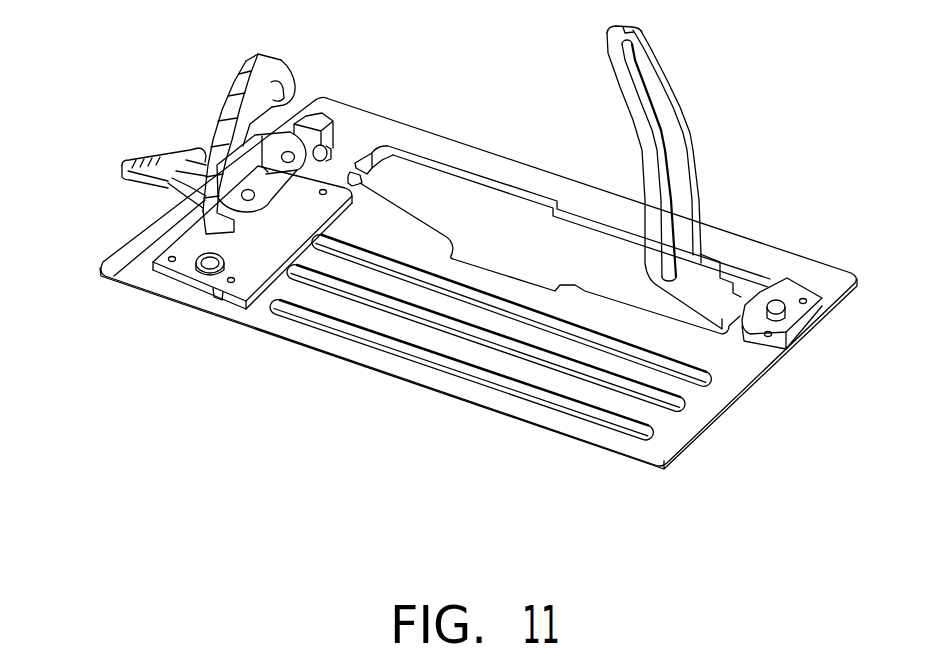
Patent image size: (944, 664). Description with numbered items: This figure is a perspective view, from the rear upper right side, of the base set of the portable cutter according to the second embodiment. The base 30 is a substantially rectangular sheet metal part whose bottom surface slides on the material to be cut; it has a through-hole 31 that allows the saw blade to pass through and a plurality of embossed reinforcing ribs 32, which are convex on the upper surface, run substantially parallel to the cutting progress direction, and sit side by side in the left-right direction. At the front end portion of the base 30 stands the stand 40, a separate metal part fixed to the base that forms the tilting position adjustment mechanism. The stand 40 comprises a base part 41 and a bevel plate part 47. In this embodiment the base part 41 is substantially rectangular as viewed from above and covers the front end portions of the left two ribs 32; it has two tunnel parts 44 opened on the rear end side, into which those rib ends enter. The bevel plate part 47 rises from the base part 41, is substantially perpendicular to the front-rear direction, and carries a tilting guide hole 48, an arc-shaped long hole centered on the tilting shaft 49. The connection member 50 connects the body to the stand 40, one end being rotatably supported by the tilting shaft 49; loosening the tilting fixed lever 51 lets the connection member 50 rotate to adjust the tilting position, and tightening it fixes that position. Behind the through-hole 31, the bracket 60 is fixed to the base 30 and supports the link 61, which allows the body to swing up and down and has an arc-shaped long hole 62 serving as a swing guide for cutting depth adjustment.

The base 30 is at (555, 442).
The through-hole 31 is at (422, 177).
The reinforcing ribs 32 is at (702, 384).
The stand 40 is at (167, 285).
The base part 41 is at (226, 300).
The tunnel parts 44 is at (322, 236).
The bevel plate part 47 is at (237, 78).
The tilting guide hole 48 is at (278, 87).
The tilting shaft 49 is at (331, 152).
The connection member 50 is at (315, 126).
The tilting fixed lever 51 is at (123, 168).
The bracket 60 is at (790, 287).
The link 61 is at (680, 142).
The arc-shaped long hole 62 is at (652, 88).